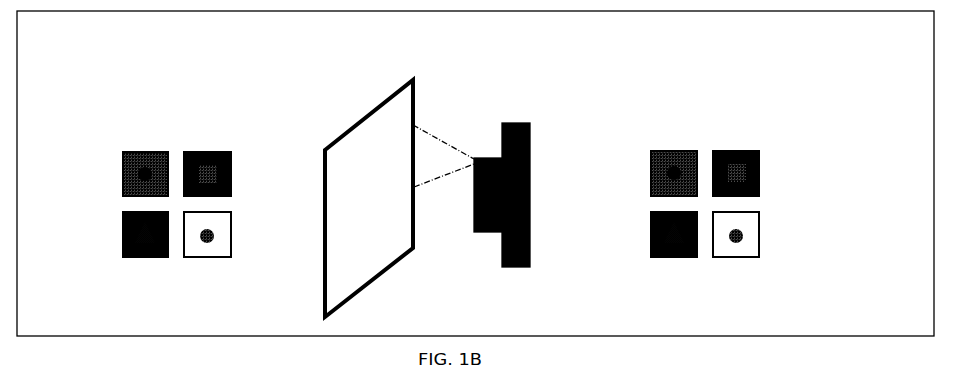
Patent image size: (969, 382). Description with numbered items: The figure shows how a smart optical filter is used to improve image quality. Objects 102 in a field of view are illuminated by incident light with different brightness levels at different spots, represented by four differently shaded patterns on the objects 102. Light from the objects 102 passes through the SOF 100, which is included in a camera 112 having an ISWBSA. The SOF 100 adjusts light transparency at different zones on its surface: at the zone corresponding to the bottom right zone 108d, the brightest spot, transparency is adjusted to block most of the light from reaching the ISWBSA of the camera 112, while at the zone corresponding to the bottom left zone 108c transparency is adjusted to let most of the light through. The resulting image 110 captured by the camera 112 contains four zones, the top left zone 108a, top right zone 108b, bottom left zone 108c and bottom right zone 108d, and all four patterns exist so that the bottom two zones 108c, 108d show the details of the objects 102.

The objects 102 is at (184, 132).
The smart optical filter (SOF) 100 is at (356, 114).
The camera 112 is at (514, 106).
The image 110 is at (702, 180).
The top left zone 108a is at (651, 168).
The top right zone 108b is at (759, 172).
The bottom left zone 108c is at (651, 228).
The bottom right zone 108d is at (759, 238).